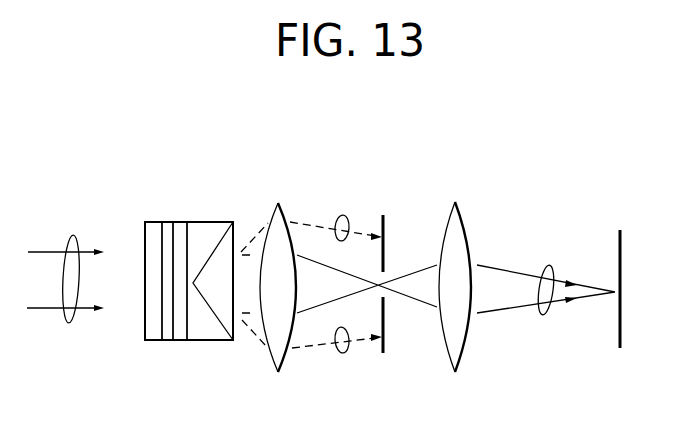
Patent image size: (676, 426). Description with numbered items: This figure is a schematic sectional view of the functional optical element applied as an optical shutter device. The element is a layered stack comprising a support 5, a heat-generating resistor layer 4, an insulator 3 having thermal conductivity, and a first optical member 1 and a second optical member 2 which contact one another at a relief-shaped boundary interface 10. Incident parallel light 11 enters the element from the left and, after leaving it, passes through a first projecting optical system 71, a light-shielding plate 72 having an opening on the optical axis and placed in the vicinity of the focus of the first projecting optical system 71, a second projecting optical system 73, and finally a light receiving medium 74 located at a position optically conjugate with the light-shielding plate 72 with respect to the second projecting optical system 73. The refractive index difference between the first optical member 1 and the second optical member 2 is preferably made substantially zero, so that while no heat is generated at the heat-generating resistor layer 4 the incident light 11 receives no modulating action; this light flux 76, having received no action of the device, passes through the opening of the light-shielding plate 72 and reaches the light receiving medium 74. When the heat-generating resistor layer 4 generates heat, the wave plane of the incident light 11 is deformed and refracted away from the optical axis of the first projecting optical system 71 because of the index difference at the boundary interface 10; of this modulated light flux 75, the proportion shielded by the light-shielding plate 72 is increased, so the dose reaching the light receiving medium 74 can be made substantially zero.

The first optical member 1 is at (228, 232).
The second optical member 2 is at (197, 233).
The insulator having thermal conductivity 3 is at (180, 228).
The heat-generating resistor layer 4 is at (170, 227).
The support 5 is at (155, 228).
The boundary interface 10 is at (217, 323).
The incident parallel light 11 is at (70, 323).
The first projecting optical system 71 is at (278, 203).
The light-shielding plate 72 is at (387, 220).
The second projecting optical system 73 is at (462, 215).
The light receiving medium 74 is at (622, 230).
The light flux having received an action of the device 75 is at (342, 215).
The light flux having received no action of the device 76 is at (542, 318).